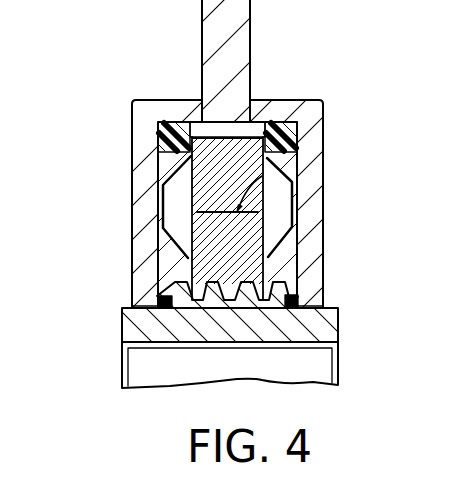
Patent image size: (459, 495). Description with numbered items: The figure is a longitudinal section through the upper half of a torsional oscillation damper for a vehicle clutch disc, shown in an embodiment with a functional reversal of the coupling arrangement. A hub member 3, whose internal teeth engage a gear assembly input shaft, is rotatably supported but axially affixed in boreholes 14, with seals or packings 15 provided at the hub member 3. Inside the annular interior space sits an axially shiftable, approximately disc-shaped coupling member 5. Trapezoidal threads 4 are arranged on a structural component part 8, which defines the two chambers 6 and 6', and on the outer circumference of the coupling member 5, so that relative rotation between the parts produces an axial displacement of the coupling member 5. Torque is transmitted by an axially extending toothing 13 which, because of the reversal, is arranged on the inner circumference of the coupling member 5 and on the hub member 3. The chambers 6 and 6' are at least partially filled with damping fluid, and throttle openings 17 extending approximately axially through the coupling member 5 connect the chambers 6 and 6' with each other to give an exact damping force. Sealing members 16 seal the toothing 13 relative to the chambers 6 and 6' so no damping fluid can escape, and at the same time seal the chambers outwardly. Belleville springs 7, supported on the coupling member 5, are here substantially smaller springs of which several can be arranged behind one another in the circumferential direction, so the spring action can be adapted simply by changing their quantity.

The hub member 3 is at (142, 323).
The trapezoidal threads 4 is at (222, 283).
The coupling member 5 is at (220, 175).
The chamber 6 is at (170, 220).
The chamber 6' is at (280, 220).
The Belleville springs 7 is at (160, 208).
The structural component part 8 is at (310, 108).
The axially extending toothing 13 is at (256, 117).
The boreholes 14 is at (157, 293).
The seals or packings 15 is at (158, 297).
The sealing member 16 is at (168, 123).
The throttle openings 17 is at (293, 168).